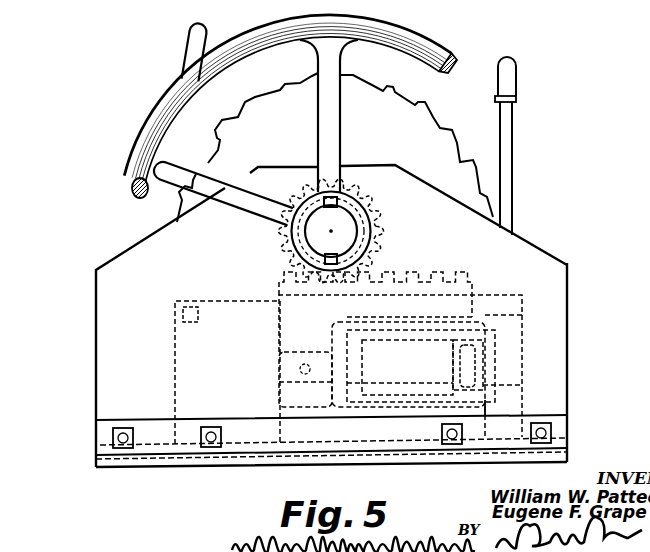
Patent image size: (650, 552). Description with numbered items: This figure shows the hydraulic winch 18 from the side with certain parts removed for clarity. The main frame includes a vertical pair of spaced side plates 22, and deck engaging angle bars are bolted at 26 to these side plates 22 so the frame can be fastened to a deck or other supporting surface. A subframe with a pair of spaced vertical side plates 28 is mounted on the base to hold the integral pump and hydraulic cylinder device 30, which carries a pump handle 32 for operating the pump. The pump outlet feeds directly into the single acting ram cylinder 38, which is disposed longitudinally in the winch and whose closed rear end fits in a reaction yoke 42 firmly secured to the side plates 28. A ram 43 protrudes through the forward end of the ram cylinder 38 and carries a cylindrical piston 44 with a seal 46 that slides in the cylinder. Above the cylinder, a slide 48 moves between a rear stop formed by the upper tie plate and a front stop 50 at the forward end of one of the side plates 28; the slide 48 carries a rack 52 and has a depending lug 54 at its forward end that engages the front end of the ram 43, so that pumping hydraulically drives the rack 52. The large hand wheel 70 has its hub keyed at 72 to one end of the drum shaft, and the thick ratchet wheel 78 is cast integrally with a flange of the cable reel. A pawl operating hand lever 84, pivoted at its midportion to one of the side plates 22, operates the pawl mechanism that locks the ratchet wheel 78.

The winch 18 is at (96, 283).
The side plates 22 is at (568, 296).
The bolts 26 is at (113, 438).
The side plates 28 is at (175, 360).
The integral pump and hydraulic cylinder device 30 is at (570, 409).
The pump handle 32 is at (514, 131).
The ram cylinder 38 is at (484, 362).
The reaction yoke 42 is at (522, 334).
The ram 43 is at (338, 388).
The cylindrical piston 44 is at (484, 386).
The seal 46 is at (456, 350).
The slide 48 is at (278, 297).
The front stop 50 is at (193, 306).
The rack 52 is at (402, 271).
The depending lug 54 is at (279, 394).
The hand wheel 70 is at (402, 24).
The key 72 is at (326, 251).
The ratchet wheel 78 is at (433, 118).
The pawl operating hand lever 84 is at (180, 58).